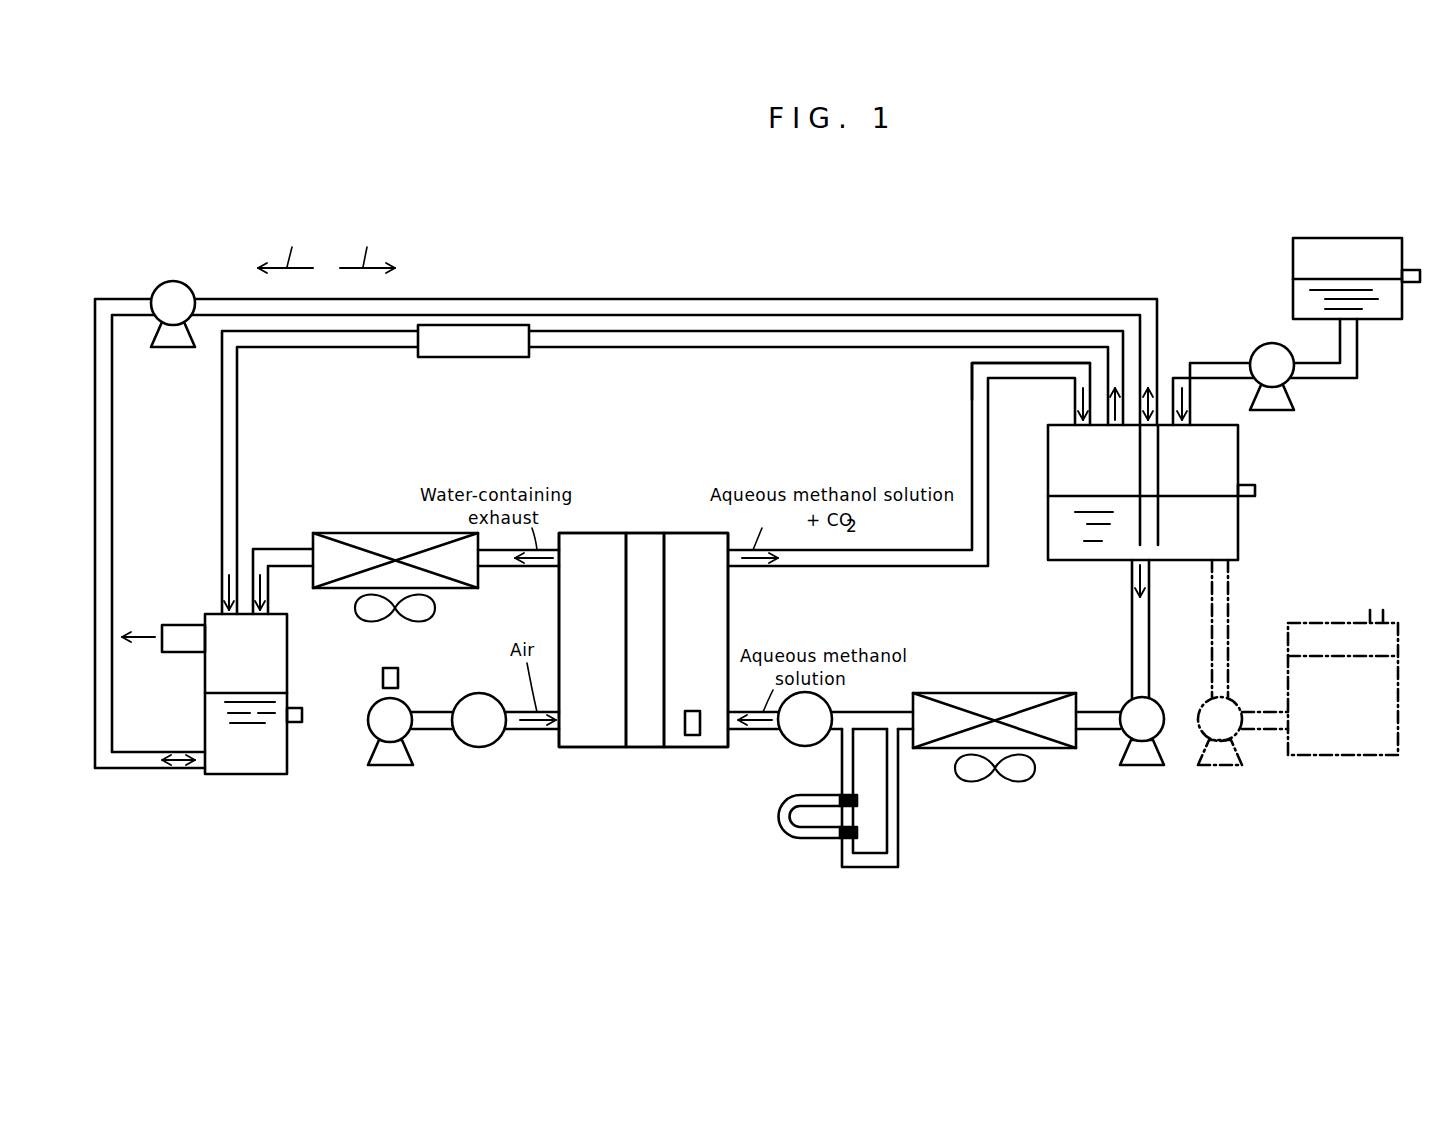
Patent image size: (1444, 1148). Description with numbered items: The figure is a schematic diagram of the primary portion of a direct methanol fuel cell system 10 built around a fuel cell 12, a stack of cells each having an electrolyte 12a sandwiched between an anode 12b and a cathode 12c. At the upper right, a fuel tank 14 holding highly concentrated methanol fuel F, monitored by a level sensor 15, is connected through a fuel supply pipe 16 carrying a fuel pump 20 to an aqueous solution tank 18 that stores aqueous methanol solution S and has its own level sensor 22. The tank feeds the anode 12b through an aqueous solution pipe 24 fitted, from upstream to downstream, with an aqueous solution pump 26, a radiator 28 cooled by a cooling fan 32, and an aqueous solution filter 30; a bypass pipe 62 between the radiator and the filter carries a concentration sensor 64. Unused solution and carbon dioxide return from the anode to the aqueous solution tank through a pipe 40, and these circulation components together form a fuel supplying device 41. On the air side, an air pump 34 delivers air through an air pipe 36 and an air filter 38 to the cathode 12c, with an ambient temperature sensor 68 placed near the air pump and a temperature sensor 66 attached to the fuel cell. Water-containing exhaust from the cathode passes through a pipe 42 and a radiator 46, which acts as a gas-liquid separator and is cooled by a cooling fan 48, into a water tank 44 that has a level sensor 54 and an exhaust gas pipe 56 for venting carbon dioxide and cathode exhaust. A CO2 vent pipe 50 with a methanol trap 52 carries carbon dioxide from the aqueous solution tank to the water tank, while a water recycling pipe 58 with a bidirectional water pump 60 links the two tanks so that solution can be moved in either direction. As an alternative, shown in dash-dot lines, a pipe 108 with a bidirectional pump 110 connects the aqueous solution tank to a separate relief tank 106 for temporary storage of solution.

The fuel cell system 10 is at (138, 240).
The fuel cell 12 is at (642, 486).
The electrolyte 12a is at (647, 533).
The anode 12b is at (687, 533).
The cathode 12c is at (588, 533).
The fuel tank 14 is at (1290, 254).
The level sensor 15 is at (1413, 268).
The fuel supply pipe 16 is at (1358, 364).
The aqueous solution tank 18 is at (1046, 458).
The fuel pump 20 is at (1258, 352).
The level sensor 22 is at (1258, 490).
The aqueous solution pipe 24 is at (1130, 625).
The aqueous solution pump 26 is at (1125, 704).
The radiator 28 is at (1003, 692).
The aqueous solution filter 30 is at (790, 742).
The cooling fan 32 is at (1022, 786).
The air pump 34 is at (388, 766).
The air pipe 36 is at (432, 732).
The air filter 38 is at (466, 694).
The pipe 40 is at (843, 565).
The fuel supplying device 41 is at (963, 478).
The pipe 42 is at (280, 548).
The water tank 44 is at (288, 661).
The radiator 46 is at (383, 533).
The cooling fan 48 is at (440, 606).
The CO2 vent pipe 50 is at (648, 353).
The methanol trap 52 is at (470, 365).
The level sensor 54 is at (302, 716).
The exhaust gas pipe 56 is at (178, 625).
The water recycling pipe 58 is at (112, 470).
The water pump 60 is at (187, 284).
The bypass pipe 62 is at (905, 805).
The concentration sensor 64 is at (812, 843).
The temperature sensor 66 is at (692, 742).
The ambient temperature sensor 68 is at (393, 667).
The relief tank 106 is at (1362, 757).
The pipe 108 is at (1230, 608).
The pump 110 is at (1242, 700).
The aqueous methanol solution S is at (1083, 514).
The methanol fuel F is at (1312, 290).